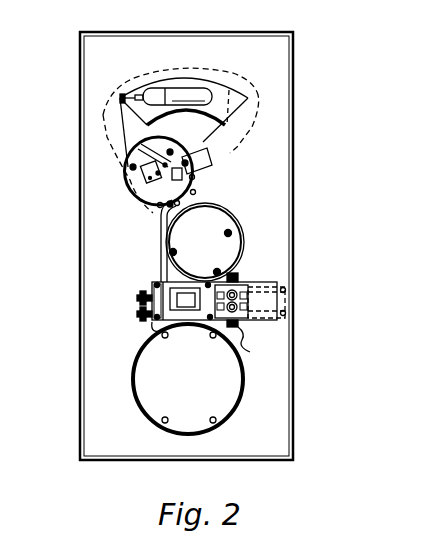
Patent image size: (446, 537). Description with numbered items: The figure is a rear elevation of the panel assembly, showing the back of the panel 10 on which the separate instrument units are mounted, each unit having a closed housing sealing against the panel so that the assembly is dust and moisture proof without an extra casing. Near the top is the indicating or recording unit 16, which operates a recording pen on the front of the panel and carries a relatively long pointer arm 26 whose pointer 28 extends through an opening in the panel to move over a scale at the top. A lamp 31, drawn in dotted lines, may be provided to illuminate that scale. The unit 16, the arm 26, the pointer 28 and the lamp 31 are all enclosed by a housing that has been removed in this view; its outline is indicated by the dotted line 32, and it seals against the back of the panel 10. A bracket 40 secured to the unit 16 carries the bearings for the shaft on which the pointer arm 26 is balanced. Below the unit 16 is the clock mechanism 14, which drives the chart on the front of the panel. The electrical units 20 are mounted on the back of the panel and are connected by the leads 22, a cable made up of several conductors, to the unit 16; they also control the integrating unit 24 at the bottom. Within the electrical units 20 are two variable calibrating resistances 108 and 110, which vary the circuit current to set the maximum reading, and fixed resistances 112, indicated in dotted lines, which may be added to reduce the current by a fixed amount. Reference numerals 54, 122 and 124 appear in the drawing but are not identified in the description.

The panel 10 is at (278, 203).
The clock mechanism 14 is at (222, 253).
The indicating or recording unit 16 is at (147, 188).
The electrical units 20 is at (272, 302).
The leads 22 is at (160, 235).
The integrating unit 24 is at (227, 375).
The pointer arm 26 is at (227, 136).
The pointer 28 is at (235, 73).
The lamp 31 is at (188, 95).
The dotted line (housing outline) 32 is at (230, 153).
The bracket 40 is at (205, 163).
The clamp block 54 is at (125, 163).
The calibrating resistance 108 is at (238, 278).
The calibrating resistance 110 is at (253, 340).
The fixed resistances 112 is at (282, 280).
The display window 122 is at (184, 300).
The control knobs 124 is at (222, 300).